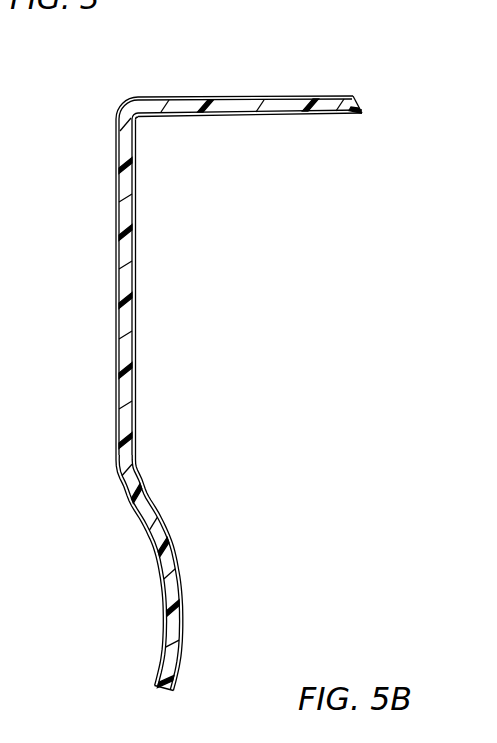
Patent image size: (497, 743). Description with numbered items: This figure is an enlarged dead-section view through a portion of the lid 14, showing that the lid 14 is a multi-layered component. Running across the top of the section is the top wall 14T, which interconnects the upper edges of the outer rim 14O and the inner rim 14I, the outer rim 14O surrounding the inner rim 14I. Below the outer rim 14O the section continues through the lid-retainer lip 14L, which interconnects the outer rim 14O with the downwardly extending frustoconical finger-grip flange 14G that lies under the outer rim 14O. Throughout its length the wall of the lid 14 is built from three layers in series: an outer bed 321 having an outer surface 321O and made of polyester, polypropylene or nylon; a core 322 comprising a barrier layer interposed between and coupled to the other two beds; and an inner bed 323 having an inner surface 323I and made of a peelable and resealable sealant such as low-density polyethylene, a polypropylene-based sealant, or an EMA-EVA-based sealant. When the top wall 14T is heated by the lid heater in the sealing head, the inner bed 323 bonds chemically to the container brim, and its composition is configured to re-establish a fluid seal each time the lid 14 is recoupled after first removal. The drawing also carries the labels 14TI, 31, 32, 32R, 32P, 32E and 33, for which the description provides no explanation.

The lid 14 is at (100, 157).
The top wall 14T is at (171, 88).
The inner surface of top wall 14TI is at (213, 118).
The outer rim 14O is at (100, 327).
The inner rim 14I is at (68, 288).
The lid-retainer lip 14L is at (186, 504).
The finger-grip flange 14G is at (190, 692).
The outer member 31 is at (338, 77).
The composite frame member 32 is at (202, 78).
The rounded corner of frame member 32R is at (105, 102).
The planar portion of frame member 32P is at (311, 77).
The end of frame member 32E is at (160, 688).
The bend 33 is at (98, 466).
The outer bed 321 is at (118, 511).
The outer surface 321O is at (231, 95).
The core 322 is at (360, 107).
The inner bed 323 is at (338, 130).
The inner surface 323I is at (277, 116).